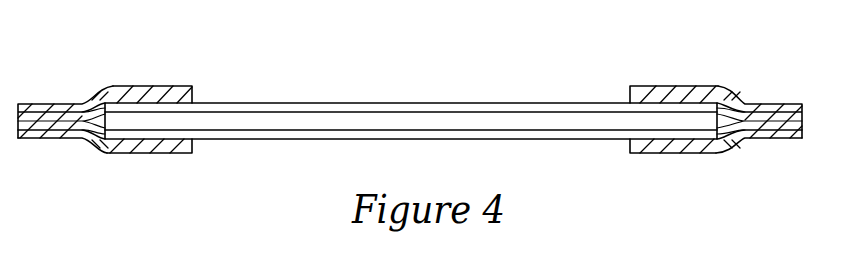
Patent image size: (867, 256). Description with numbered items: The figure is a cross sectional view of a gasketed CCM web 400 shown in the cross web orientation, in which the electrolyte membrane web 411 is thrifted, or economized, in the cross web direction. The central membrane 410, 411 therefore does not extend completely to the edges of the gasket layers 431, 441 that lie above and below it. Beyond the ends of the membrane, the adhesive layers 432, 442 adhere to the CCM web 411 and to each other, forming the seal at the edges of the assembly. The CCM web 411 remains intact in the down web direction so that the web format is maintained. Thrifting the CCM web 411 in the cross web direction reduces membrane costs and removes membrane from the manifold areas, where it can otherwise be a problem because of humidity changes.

The gasketed CCM web 400 is at (317, 55).
The tube 410 is at (509, 96).
The electrolyte membrane web 411 is at (367, 118).
The gasket layer 431 is at (128, 90).
The gasket layer 441 is at (128, 150).
The adhesive layer 432 is at (91, 108).
The adhesive layer 442 is at (97, 137).